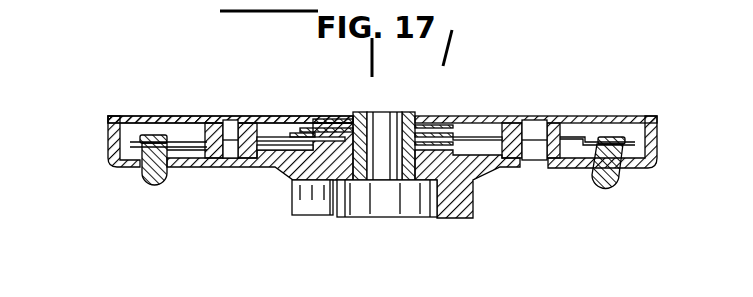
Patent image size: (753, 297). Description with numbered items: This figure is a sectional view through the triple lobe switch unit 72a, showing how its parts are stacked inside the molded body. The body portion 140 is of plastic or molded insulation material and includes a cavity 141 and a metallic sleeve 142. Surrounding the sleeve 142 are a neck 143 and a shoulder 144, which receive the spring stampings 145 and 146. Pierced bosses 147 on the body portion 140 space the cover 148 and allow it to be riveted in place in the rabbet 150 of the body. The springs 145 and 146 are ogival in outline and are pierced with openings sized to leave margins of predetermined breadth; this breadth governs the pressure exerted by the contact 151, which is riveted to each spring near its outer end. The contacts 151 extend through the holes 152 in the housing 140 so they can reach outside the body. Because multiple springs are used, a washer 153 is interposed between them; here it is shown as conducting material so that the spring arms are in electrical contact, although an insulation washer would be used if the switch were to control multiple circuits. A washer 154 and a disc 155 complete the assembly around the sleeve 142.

The triple lobe switch unit 72a is at (448, 218).
The body portion 140 is at (292, 180).
The cavity 141 is at (127, 135).
The metallic sleeve 142 is at (362, 112).
The neck 143 is at (342, 125).
The shoulder 144 is at (331, 217).
The spring stamping 145 is at (272, 137).
The spring stamping 146 is at (577, 116).
The pierced bosses 147 is at (212, 165).
The cover 148 is at (178, 116).
The rabbet 150 is at (108, 120).
The contact 151 is at (152, 182).
The holes 152 is at (137, 155).
The washer 153 is at (477, 130).
The washer 154 is at (447, 130).
The disc 155 is at (430, 124).